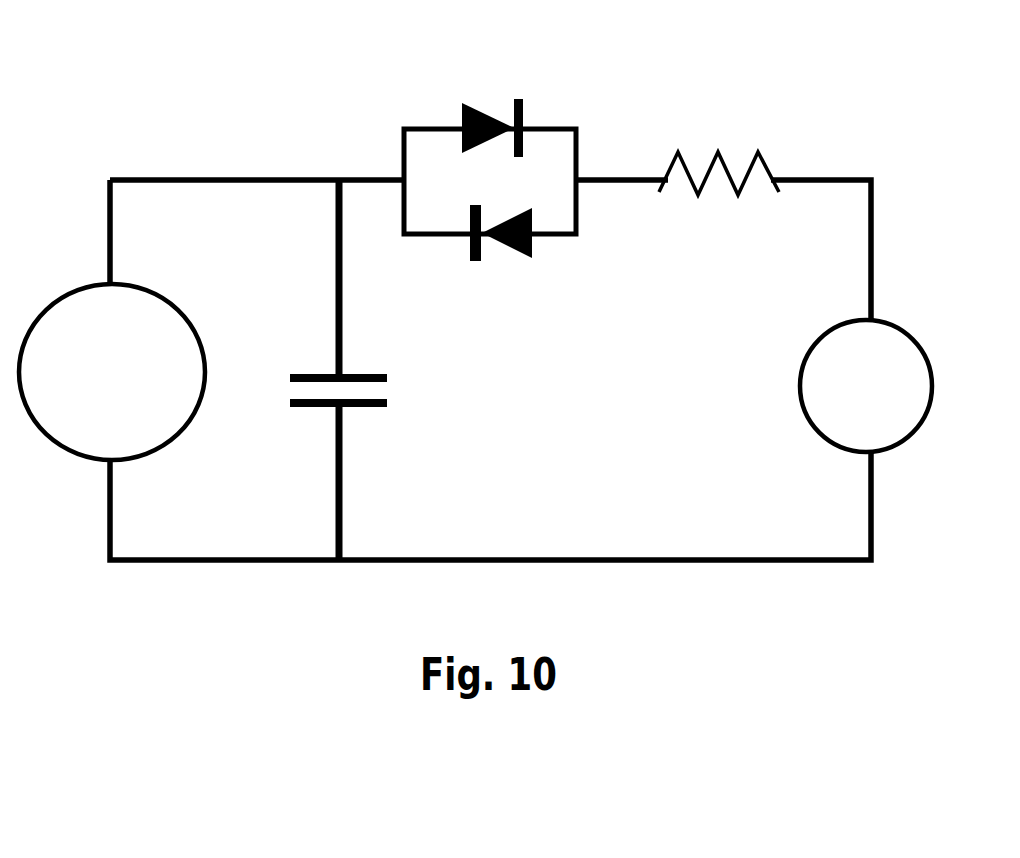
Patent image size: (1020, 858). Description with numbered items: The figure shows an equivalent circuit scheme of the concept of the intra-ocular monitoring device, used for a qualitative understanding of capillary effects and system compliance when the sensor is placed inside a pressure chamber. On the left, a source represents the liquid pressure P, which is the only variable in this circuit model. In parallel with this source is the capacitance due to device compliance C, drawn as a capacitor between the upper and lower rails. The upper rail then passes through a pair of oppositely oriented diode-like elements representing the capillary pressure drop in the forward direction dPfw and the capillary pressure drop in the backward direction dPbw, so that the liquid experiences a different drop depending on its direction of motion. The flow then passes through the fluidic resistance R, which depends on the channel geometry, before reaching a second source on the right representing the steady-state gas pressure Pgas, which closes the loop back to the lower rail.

The liquid pressure P is at (112, 372).
The capacitance due to device compliance C is at (352, 370).
The fluidic resistance R is at (719, 150).
The steady-state gas pressure Pgas is at (866, 386).
The capillary pressure drop in forward direction dPfw is at (489, 98).
The capillary pressure drop in backward direction dPbw is at (491, 265).